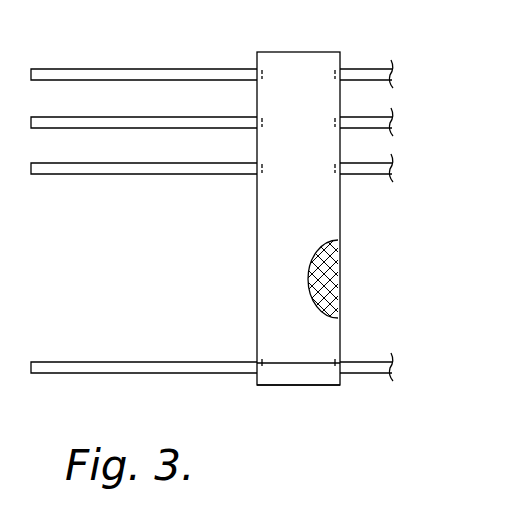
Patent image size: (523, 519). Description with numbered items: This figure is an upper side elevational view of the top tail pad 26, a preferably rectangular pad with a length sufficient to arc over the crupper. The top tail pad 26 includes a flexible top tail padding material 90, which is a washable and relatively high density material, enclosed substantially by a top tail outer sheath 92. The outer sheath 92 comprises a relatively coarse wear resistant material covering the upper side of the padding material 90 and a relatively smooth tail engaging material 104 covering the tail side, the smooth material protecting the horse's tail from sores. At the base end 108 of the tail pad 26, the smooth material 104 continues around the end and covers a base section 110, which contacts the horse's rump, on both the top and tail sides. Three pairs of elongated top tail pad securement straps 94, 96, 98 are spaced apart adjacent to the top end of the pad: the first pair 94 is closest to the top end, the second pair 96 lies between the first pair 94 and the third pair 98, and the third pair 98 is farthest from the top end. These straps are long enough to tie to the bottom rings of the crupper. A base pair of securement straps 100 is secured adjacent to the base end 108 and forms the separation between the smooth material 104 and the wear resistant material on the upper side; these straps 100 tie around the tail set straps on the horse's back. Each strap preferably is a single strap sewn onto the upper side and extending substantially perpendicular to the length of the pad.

The top tail pad 26 is at (230, 243).
The top tail padding material 90 is at (318, 280).
The top tail outer sheath 92 is at (357, 280).
The first pair of top tail pad securement straps 94 is at (373, 68).
The second pair of top tail pad securement straps 96 is at (372, 118).
The third pair of top tail pad securement straps 98 is at (385, 163).
The base pair of top tail pad securement straps 100 is at (378, 362).
The smooth tail engaging material 104 is at (310, 200).
The base end 108 is at (312, 388).
The base section 110 is at (280, 375).